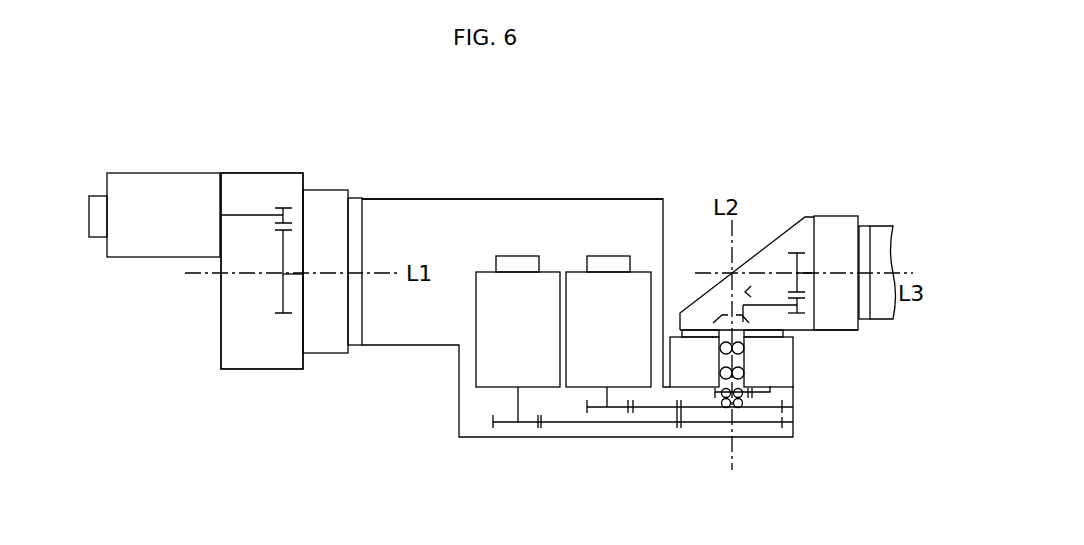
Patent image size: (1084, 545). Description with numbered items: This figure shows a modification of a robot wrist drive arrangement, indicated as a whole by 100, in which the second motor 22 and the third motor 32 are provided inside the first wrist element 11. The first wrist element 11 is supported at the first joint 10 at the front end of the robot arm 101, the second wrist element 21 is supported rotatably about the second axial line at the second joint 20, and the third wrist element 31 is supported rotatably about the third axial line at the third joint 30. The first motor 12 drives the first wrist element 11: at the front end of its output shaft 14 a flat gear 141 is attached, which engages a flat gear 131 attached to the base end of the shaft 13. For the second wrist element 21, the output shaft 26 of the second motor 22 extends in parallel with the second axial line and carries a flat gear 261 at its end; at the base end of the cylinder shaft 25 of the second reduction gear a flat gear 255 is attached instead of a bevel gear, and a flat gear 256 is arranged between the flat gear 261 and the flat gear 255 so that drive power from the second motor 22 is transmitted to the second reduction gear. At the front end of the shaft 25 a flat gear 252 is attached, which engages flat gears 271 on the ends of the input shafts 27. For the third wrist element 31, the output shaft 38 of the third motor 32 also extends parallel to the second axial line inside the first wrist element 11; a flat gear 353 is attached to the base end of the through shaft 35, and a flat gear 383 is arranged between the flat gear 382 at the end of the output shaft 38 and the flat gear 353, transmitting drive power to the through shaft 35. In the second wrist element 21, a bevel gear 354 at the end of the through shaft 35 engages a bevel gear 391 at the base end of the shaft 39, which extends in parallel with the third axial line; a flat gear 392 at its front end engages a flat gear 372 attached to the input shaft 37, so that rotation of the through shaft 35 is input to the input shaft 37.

The drive device 100 is at (693, 117).
The first joint 10 is at (330, 190).
The first wrist element 11 is at (412, 190).
The first motor 12 is at (158, 173).
The shaft 13 is at (295, 276).
The output shaft 14 is at (242, 213).
The robot arm 101 is at (265, 165).
The flat gear 141 is at (288, 206).
The flat gear 131 is at (278, 315).
The second joint 20 is at (793, 368).
The second wrist element 21 is at (786, 212).
The second motor 22 is at (577, 270).
The cylinder shaft 25 is at (727, 406).
The output shaft 26 is at (607, 404).
The input shaft 27 is at (757, 396).
The flat gear 252 is at (713, 394).
The flat gear 255 is at (783, 408).
The flat gear 256 is at (633, 413).
The flat gear 261 is at (583, 411).
The flat gear 271 is at (790, 390).
The third joint 30 is at (845, 216).
The third wrist element 31 is at (880, 214).
The third motor 32 is at (485, 270).
The through shaft 35 is at (733, 358).
The input shaft 37 is at (808, 268).
The output shaft 38 is at (517, 402).
The shaft 39 is at (770, 305).
The flat gear 353 is at (783, 424).
The bevel gear 354 is at (718, 317).
The flat gear 372 is at (796, 252).
The flat gear 382 is at (493, 425).
The flat gear 383 is at (539, 429).
The bevel gear 391 is at (743, 290).
The flat gear 392 is at (803, 315).